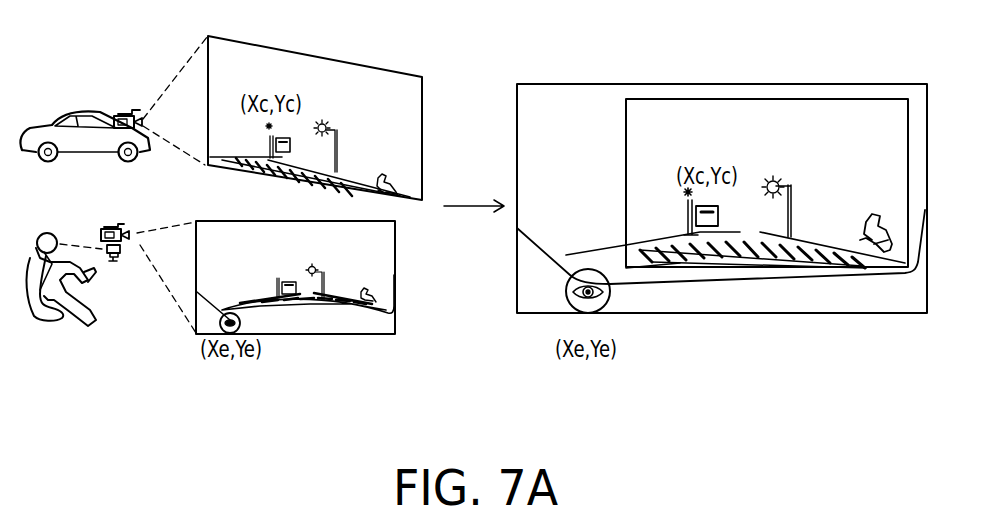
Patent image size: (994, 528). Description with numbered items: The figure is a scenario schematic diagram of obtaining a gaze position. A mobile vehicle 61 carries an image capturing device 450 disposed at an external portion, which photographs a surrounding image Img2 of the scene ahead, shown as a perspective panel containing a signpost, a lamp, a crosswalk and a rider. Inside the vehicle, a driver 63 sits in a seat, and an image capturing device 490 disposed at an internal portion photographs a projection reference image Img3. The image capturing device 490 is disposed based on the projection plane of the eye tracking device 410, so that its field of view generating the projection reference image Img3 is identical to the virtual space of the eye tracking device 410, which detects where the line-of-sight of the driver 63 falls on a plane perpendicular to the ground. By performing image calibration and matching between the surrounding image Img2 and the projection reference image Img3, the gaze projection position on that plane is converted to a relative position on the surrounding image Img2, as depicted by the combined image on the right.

The mobile vehicle 61 is at (38, 126).
The image capturing device 450 is at (128, 114).
The image capturing device 490 is at (116, 228).
The eye tracking device 410 is at (115, 262).
The driver 63 is at (54, 320).
The surrounding image Img2 is at (376, 62).
The projection reference image Img3 is at (395, 256).